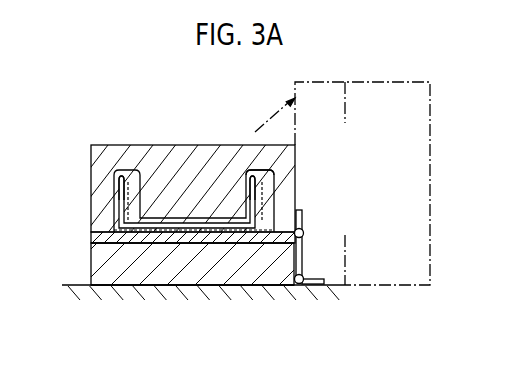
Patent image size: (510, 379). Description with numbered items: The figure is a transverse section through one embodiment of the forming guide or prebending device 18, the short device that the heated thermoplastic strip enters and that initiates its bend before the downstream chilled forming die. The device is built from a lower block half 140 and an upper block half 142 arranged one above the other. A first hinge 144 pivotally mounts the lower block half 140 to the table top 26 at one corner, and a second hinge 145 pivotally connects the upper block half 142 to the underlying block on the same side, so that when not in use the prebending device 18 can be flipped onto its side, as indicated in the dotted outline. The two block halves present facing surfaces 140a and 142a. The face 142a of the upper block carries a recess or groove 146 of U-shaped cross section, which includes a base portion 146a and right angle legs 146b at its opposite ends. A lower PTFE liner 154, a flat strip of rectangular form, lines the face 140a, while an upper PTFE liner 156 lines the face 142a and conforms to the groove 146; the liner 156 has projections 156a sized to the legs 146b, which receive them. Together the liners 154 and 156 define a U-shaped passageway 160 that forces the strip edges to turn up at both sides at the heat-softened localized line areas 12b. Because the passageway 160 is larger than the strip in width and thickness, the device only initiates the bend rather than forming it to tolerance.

The prebending device 18 is at (152, 82).
The table top 26 is at (68, 287).
The heat-softened localized line areas 12b is at (123, 244).
The lower block half 140 is at (199, 250).
The facing surface of lower block 140a is at (160, 244).
The upper block half 142 is at (108, 152).
The facing surface of upper block 142a is at (89, 237).
The first hinge 144 is at (305, 278).
The second hinge 145 is at (305, 233).
The U-shaped groove 146 is at (281, 217).
The base portion of groove 146a is at (198, 182).
The right angle legs of groove 146b is at (272, 174).
The lower PTFE liner 154 is at (252, 243).
The upper PTFE liner 156 is at (158, 222).
The projections of upper liner 156a is at (144, 182).
The U-shaped passageway 160 is at (120, 198).